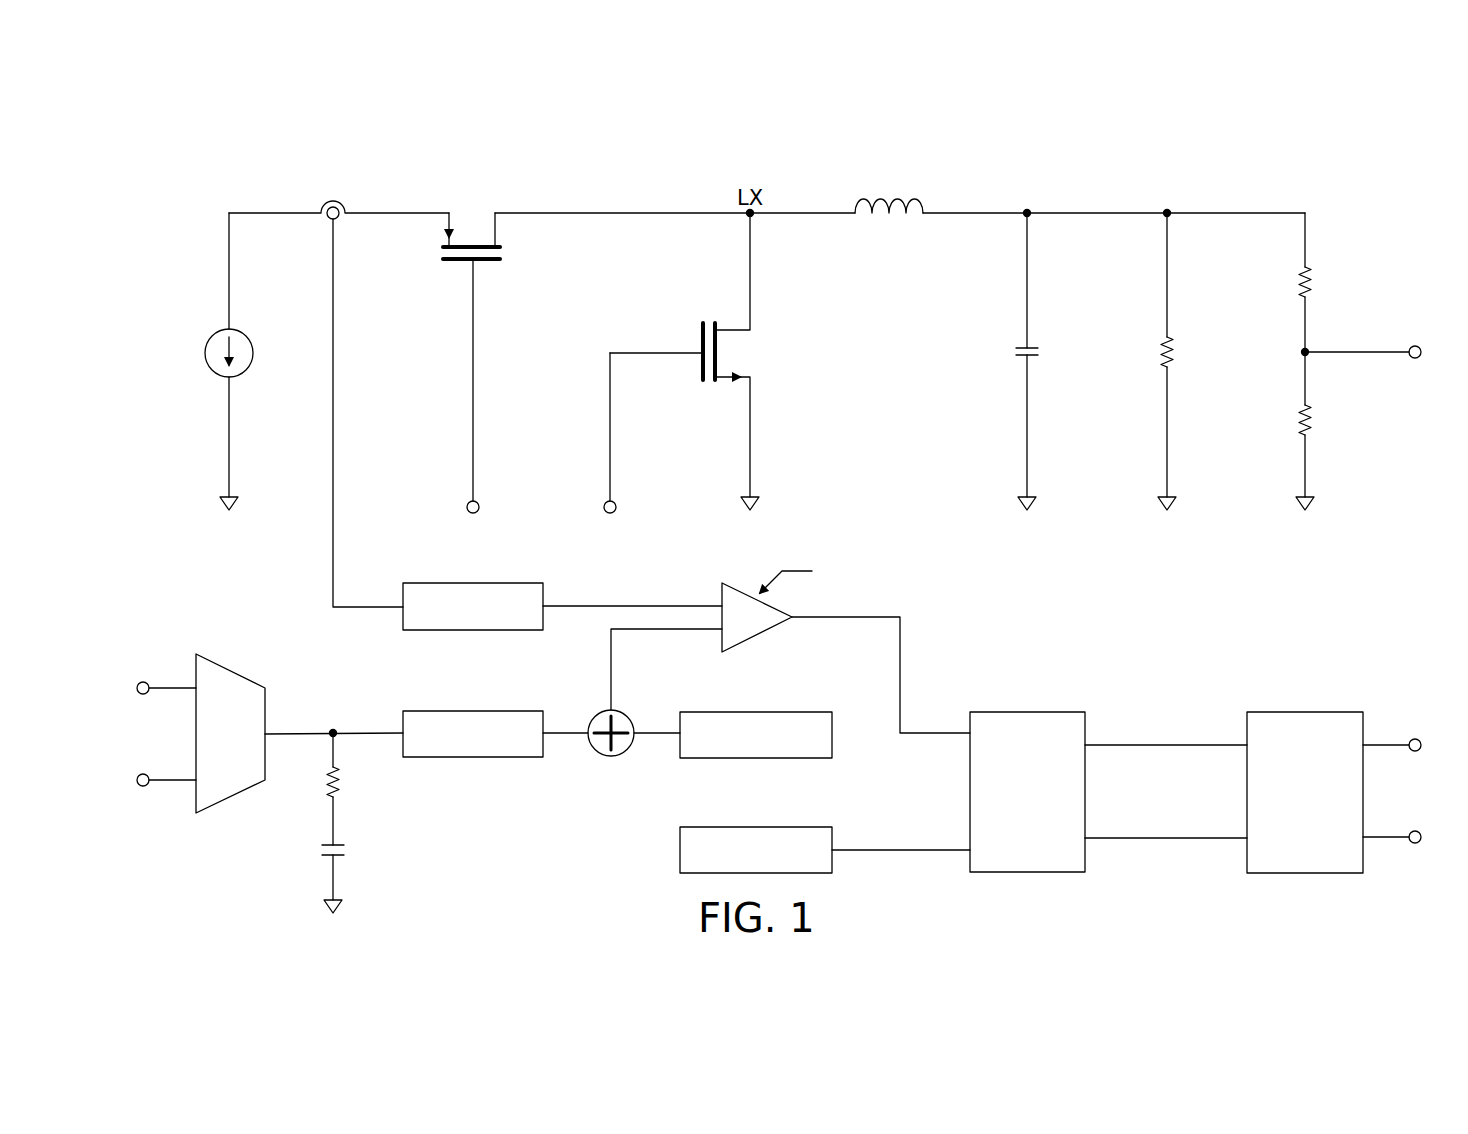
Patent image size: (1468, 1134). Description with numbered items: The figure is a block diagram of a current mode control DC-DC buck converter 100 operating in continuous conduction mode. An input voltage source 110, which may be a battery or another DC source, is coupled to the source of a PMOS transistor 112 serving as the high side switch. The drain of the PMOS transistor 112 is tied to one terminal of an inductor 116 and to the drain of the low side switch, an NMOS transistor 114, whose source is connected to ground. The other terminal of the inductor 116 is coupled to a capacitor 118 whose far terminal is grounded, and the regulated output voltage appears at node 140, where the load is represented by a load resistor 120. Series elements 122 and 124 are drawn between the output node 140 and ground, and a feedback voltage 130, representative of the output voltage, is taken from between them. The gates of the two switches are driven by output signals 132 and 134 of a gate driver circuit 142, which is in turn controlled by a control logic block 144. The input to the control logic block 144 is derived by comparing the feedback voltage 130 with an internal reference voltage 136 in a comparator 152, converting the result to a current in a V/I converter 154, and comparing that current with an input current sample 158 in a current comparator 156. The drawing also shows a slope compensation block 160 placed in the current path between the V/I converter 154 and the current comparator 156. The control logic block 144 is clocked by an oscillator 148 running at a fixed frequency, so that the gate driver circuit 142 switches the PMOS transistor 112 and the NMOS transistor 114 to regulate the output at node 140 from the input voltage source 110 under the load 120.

The switching regulator circuit 100 is at (1310, 174).
The input voltage source 110 is at (217, 331).
The PMOS transistor 112 is at (462, 266).
The NMOS transistor 114 is at (700, 342).
The inductor 116 is at (897, 193).
The capacitor 118 is at (1044, 352).
The load resistor 120 is at (1178, 352).
The upper feedback resistor 122 is at (1310, 283).
The lower feedback resistor 124 is at (1310, 420).
The feedback voltage 130 is at (1363, 349).
The output signal 132 is at (468, 481).
The output signal 134 is at (608, 481).
The internal reference voltage 136 is at (170, 686).
The node 140 is at (1170, 205).
The gate driver circuit 142 is at (1305, 875).
The control logic block 144 is at (1030, 875).
The oscillator 148 is at (678, 863).
The comparator 152 is at (230, 800).
The V/I converter 154 is at (470, 759).
The current comparator 156 is at (765, 641).
The input current sample 158 is at (470, 633).
The slope compensation circuit 160 is at (755, 760).